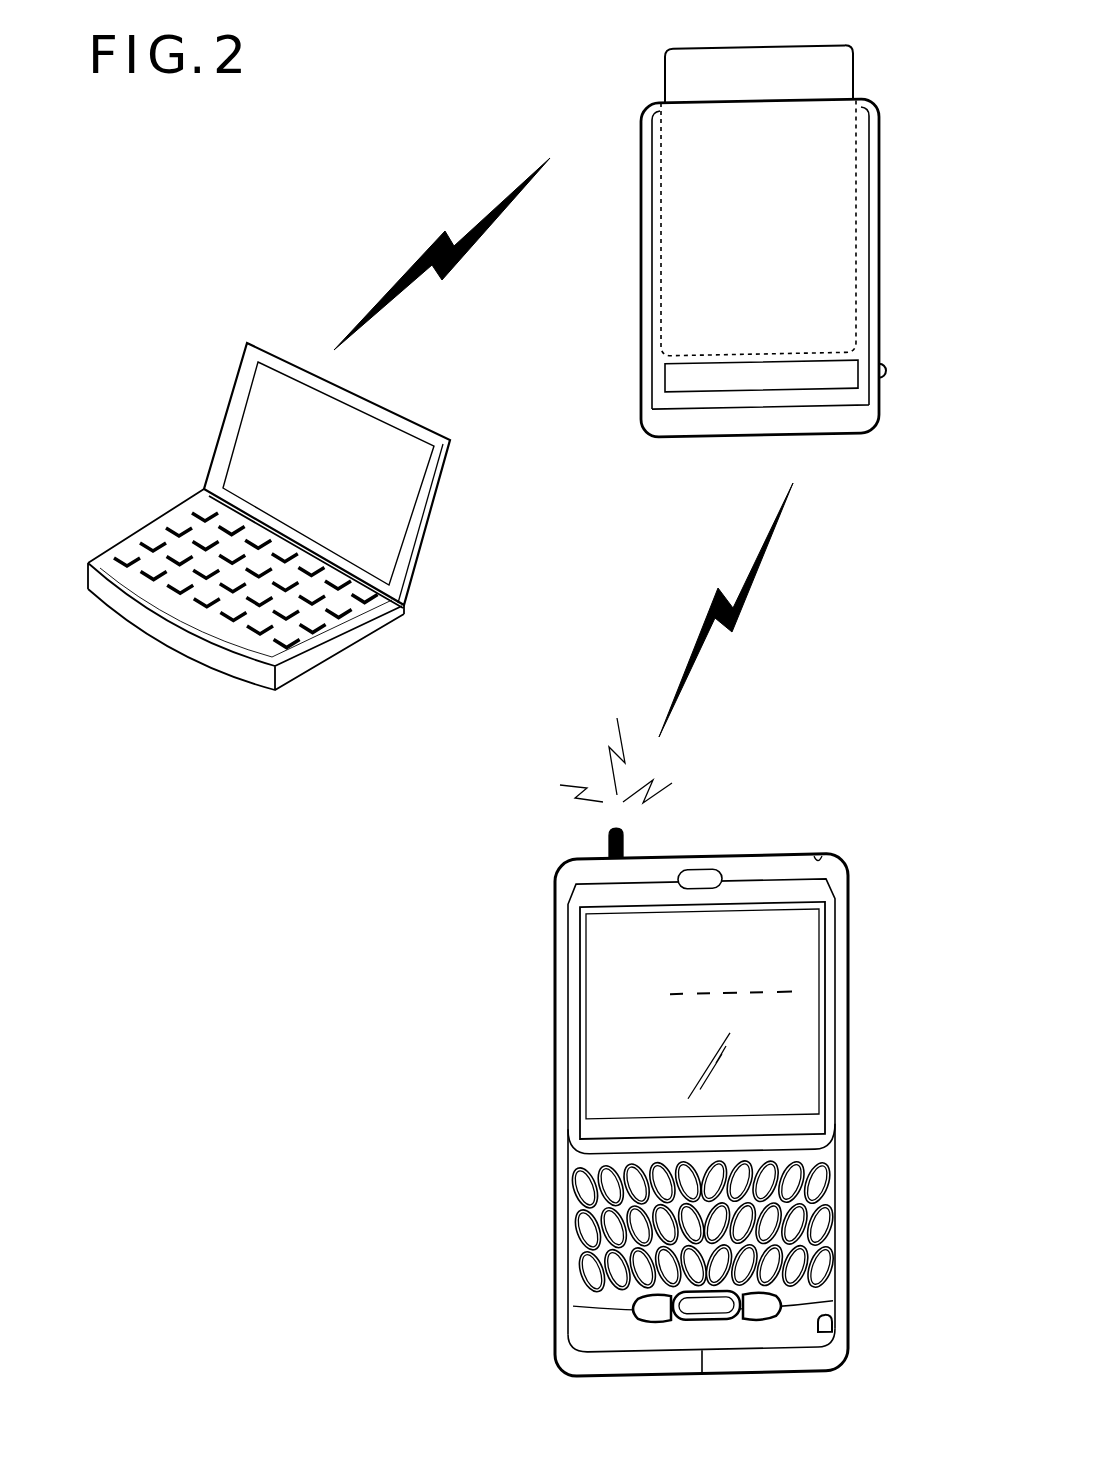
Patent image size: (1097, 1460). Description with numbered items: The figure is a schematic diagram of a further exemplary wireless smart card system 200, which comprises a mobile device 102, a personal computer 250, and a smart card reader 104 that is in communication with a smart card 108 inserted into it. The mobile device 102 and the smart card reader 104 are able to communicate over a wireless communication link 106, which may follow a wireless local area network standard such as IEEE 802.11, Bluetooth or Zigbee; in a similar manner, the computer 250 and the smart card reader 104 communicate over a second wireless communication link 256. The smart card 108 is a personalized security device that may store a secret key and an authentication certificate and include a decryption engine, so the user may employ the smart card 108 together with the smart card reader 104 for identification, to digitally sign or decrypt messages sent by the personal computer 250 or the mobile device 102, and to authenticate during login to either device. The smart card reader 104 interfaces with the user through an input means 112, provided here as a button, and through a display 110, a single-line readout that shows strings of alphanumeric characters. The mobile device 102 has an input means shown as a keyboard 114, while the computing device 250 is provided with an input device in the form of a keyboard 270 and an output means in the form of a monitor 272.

The mobile device 102 is at (555, 1130).
The smart card reader 104 is at (643, 278).
The wireless communication link 106 is at (680, 625).
The smart card 108 is at (715, 44).
The display 110 is at (774, 390).
The input means 112 is at (888, 375).
The keyboard 114 is at (836, 1153).
The system 200 is at (280, 1104).
The personal computer 250 is at (322, 647).
The wireless communication link 256 is at (397, 231).
The keyboard 270 is at (213, 605).
The monitor 272 is at (328, 473).